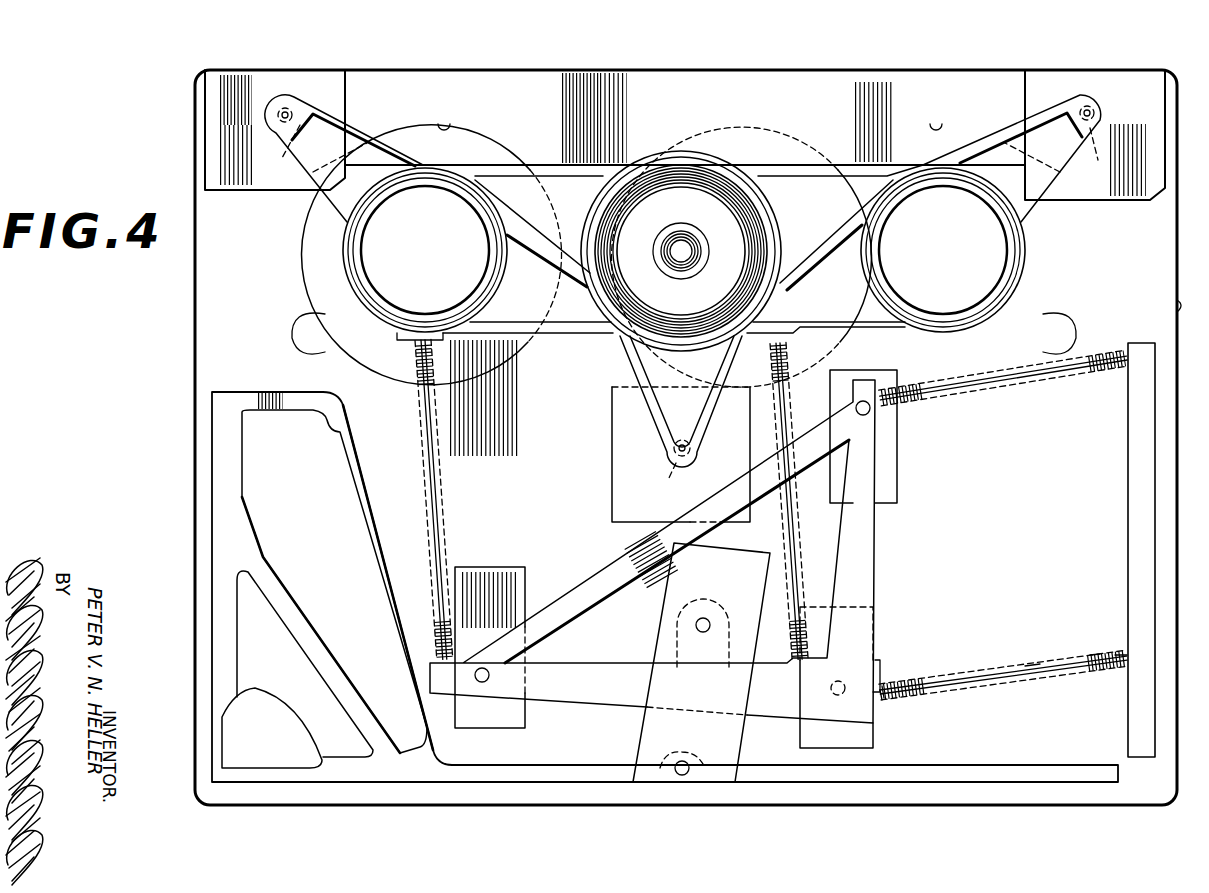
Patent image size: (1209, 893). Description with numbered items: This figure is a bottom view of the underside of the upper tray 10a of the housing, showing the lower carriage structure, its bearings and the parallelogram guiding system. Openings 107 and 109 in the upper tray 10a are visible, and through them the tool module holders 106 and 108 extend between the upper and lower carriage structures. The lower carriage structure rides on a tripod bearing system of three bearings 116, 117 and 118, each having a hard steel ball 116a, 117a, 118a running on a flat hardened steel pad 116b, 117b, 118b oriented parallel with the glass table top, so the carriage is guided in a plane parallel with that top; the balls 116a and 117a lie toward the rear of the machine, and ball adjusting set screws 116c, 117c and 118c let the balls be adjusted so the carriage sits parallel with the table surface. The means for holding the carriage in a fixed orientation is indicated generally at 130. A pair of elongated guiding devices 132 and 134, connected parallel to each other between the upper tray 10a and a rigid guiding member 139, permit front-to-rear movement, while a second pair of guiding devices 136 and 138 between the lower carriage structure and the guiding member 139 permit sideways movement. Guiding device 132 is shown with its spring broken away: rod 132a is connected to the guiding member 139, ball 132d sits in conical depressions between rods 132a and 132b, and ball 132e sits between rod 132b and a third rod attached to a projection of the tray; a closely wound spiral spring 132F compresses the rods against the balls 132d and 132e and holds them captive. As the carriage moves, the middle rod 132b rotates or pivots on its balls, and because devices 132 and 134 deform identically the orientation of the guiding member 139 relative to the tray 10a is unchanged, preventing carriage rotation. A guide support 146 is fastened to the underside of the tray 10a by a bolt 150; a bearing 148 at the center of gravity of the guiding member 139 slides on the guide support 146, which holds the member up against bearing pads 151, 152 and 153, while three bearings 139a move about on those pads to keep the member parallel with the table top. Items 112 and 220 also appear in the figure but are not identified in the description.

The upper tray 10a is at (1176, 303).
The tool module holder 106 is at (1000, 222).
The opening 107 is at (936, 126).
The tool module holder 108 is at (443, 188).
The opening 109 is at (440, 125).
The center reel 112 is at (668, 162).
The tape wound on center reel 220 is at (710, 176).
The bearing 116 is at (212, 56).
The hard steel ball 116a is at (285, 108).
The hardened steel pad 116b is at (320, 78).
The ball adjusting set screw 116c is at (272, 153).
The bearing 117 is at (1180, 178).
The hard steel ball 117a is at (1088, 106).
The hardened steel pad 117b is at (1125, 80).
The ball adjusting set screw 117c is at (1100, 155).
The bearing 118 is at (600, 513).
The hard steel ball 118a is at (692, 448).
The hardened steel pad 118b is at (628, 424).
The ball adjusting set screw 118c is at (654, 483).
The carriage guiding means 130 is at (1095, 325).
The elongated guiding device 132 is at (973, 655).
The rod 132a is at (884, 700).
The rod 132b is at (1032, 672).
The ball bearing 132d is at (898, 688).
The ball 132e is at (1118, 654).
The spiral spring 132F is at (1092, 652).
The elongated guiding device 134 is at (1015, 392).
The elongated guiding device 136 is at (768, 564).
The elongated guiding device 138 is at (450, 495).
The rigid guiding member 139 is at (876, 528).
The bearings 139a is at (872, 408).
The guide support 146 is at (645, 718).
The bearing 148 is at (738, 612).
The bolt 150 is at (675, 768).
The bearing pad 151 is at (522, 588).
The bearing pad 152 is at (898, 452).
The bearing pad 153 is at (800, 748).